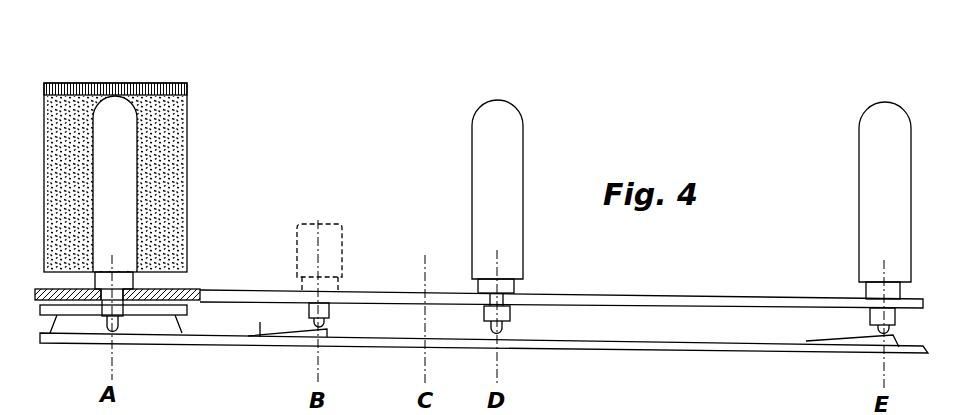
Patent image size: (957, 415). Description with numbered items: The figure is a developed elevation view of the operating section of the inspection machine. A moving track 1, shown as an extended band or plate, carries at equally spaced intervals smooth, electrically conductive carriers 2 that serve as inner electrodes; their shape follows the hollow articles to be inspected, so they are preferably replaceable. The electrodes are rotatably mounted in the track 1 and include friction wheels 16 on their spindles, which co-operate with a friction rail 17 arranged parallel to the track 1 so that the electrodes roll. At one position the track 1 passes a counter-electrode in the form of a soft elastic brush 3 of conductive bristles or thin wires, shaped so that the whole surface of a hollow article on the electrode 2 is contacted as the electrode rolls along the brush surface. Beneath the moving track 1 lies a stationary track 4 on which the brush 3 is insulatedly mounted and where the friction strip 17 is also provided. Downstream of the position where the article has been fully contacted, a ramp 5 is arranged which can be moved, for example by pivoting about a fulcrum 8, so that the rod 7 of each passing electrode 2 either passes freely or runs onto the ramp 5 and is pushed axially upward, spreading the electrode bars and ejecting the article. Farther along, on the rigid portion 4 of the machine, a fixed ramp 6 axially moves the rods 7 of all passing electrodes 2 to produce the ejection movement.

The track 1 is at (242, 293).
The carrier 2 is at (130, 167).
The brush 3 is at (172, 120).
The stationary track 4 is at (384, 343).
The ramp 5 is at (301, 336).
The ramp 6 is at (873, 339).
The rod 7 is at (110, 323).
The fulcrum 8 is at (259, 348).
The friction wheel 16 is at (120, 318).
The friction rail 17 is at (43, 308).